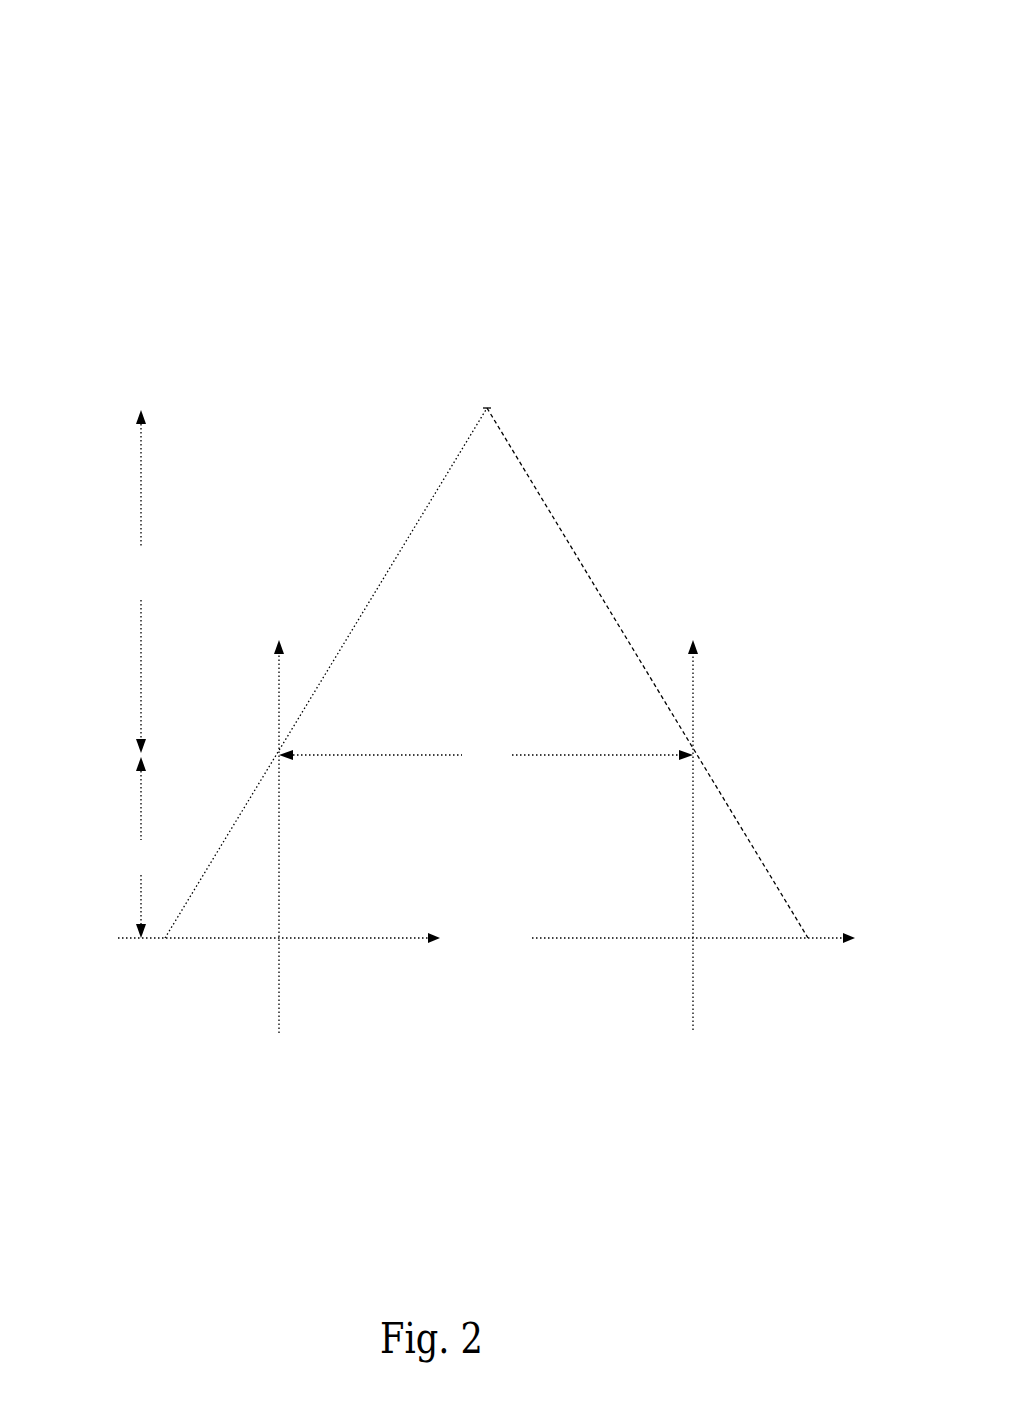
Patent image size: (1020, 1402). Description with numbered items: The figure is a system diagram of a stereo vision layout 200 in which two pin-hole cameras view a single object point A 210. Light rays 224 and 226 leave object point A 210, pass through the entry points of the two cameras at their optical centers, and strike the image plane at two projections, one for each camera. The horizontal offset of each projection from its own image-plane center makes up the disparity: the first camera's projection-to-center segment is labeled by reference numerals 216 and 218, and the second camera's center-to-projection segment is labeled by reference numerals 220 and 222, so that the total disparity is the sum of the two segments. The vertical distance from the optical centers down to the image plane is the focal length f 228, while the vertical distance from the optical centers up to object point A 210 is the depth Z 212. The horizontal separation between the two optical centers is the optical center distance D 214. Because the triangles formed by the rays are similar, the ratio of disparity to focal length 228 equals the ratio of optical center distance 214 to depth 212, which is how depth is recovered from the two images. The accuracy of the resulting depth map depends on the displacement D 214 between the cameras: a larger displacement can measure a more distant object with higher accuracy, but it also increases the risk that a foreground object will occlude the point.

The stereo vision layout 200 is at (127, 118).
The object point A 210 is at (468, 370).
The depth Z 212 is at (113, 558).
The optical center distance D 214 is at (618, 747).
The P1O1 disparity segment 216 is at (280, 858).
The P1O1 disparity segment 218 is at (225, 933).
The O2P2 disparity segment 220 is at (693, 858).
The O2P2 disparity segment 222 is at (768, 933).
The light ray 224 is at (357, 616).
The light ray 226 is at (582, 557).
The focal length f 228 is at (115, 840).